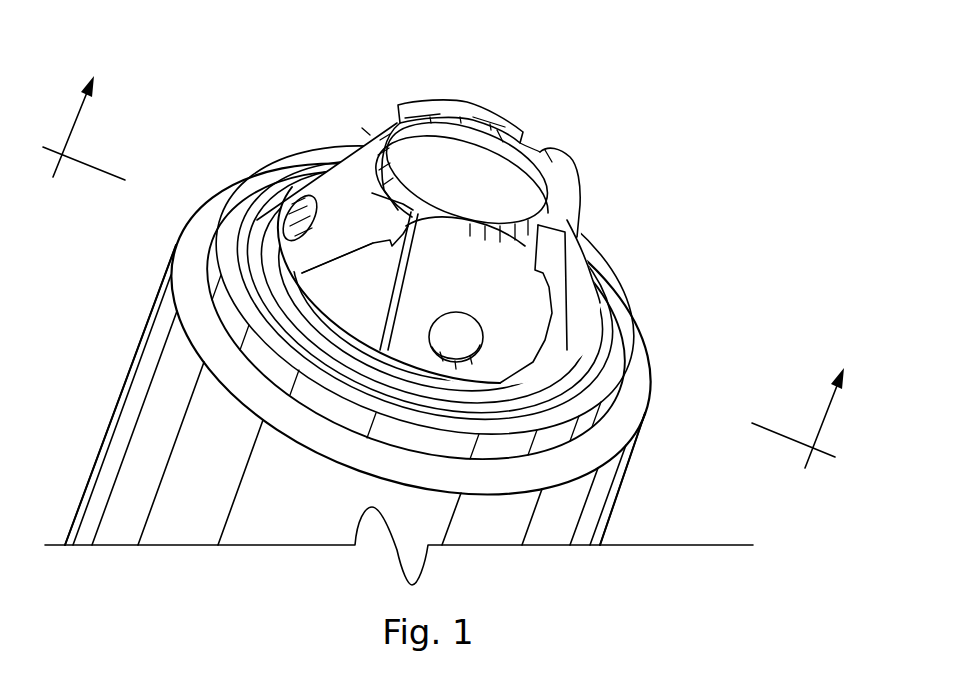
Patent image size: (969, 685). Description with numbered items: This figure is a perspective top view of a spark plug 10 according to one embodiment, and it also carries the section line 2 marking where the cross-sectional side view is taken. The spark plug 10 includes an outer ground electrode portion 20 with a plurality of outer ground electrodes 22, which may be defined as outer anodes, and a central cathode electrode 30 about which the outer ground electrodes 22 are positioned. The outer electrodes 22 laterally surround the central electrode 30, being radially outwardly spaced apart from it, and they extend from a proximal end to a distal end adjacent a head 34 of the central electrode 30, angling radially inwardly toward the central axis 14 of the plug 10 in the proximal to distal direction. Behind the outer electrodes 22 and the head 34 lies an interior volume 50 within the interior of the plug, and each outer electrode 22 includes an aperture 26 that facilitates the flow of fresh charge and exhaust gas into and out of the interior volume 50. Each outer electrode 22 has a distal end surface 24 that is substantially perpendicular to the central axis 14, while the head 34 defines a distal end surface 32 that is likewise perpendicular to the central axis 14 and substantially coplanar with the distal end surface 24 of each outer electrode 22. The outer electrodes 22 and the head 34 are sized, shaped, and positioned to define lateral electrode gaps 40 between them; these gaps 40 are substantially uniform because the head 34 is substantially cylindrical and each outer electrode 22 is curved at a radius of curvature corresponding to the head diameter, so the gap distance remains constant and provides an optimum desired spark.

The section line 2- 2 is at (440, 279).
The spark plug 10 is at (615, 110).
The central axis 14 is at (260, 221).
The outer ground electrode portion 20 is at (645, 322).
The outer ground electrodes 22 is at (408, 110).
The distal end surface 24 is at (436, 110).
The aperture 26 is at (287, 208).
The central cathode electrode 30 is at (512, 168).
The distal end surface 32 is at (470, 137).
The head 34 is at (568, 198).
The lateral electrode gaps 40 is at (503, 135).
The interior volume 50 is at (372, 275).